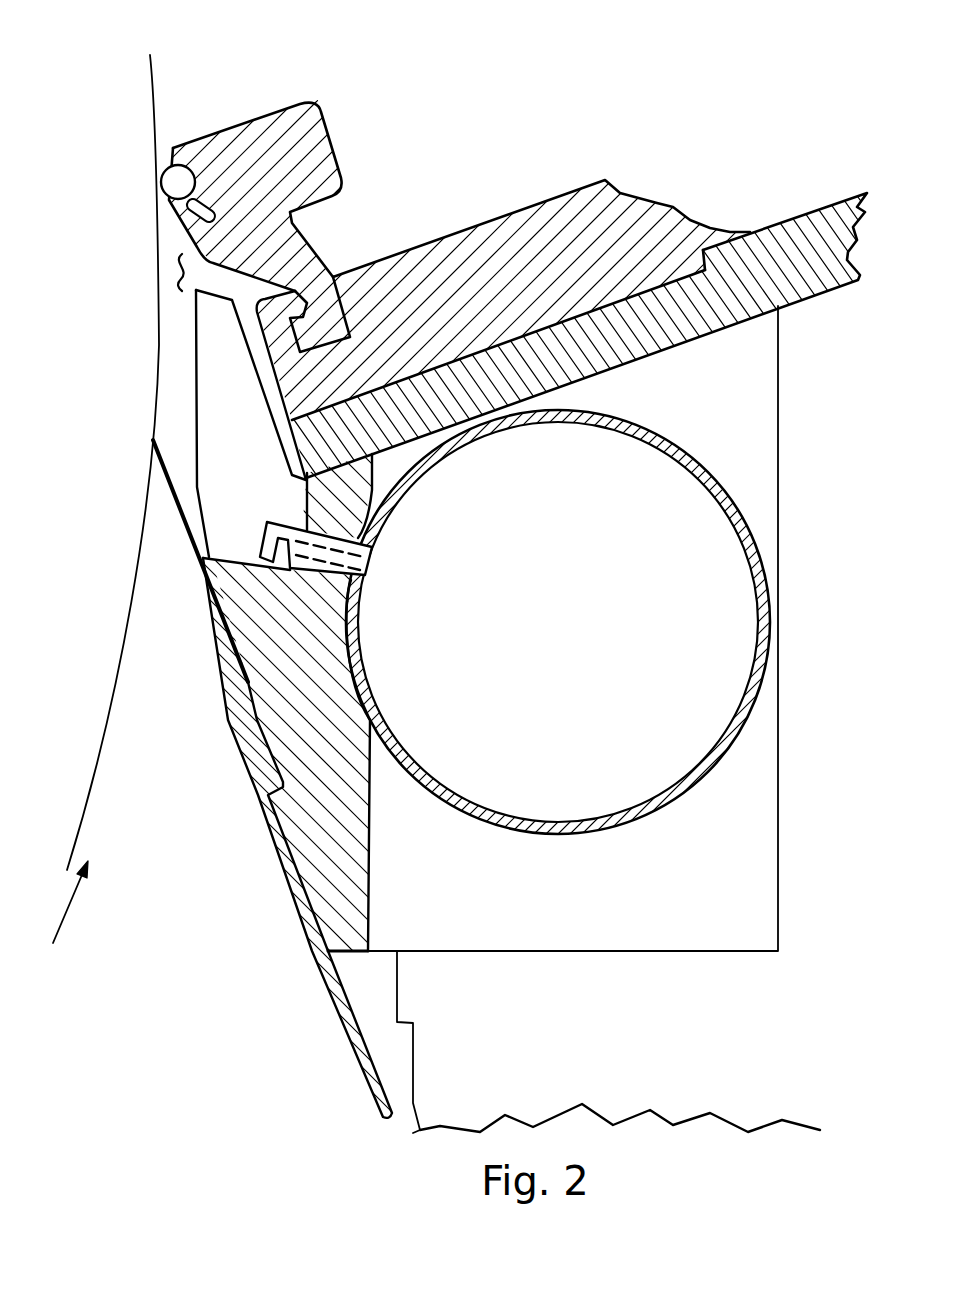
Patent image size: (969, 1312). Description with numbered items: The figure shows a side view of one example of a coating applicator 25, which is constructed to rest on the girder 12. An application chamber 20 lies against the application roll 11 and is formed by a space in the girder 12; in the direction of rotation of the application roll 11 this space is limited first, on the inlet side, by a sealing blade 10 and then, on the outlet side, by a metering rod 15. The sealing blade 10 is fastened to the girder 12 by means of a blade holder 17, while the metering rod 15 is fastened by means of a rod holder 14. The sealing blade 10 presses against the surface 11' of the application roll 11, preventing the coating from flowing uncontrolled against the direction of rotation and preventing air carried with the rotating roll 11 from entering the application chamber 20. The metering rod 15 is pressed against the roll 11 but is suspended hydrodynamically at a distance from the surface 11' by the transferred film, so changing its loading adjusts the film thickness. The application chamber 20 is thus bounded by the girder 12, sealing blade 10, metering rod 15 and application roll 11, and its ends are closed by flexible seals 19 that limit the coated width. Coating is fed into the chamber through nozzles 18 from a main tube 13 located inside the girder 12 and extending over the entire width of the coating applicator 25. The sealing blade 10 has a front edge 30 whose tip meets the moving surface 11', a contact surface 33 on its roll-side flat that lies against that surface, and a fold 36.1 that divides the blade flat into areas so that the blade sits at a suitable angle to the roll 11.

The sealing blade 10 is at (170, 533).
The application roll 11 is at (109, 462).
The surface of the application roll 11' is at (114, 878).
The girder 12 is at (787, 250).
The main tube 13 is at (612, 818).
The rod holder 14 is at (290, 220).
The metering rod 15 is at (175, 187).
The blade holder 17 is at (236, 744).
The nozzles 18 is at (376, 562).
The flexible seals 19 is at (220, 458).
The application chamber 20 is at (177, 268).
The coating applicator 25 is at (535, 127).
The second elongated edge 30 is at (157, 335).
The contact surface 33 is at (160, 357).
The fold 36.1 is at (168, 443).